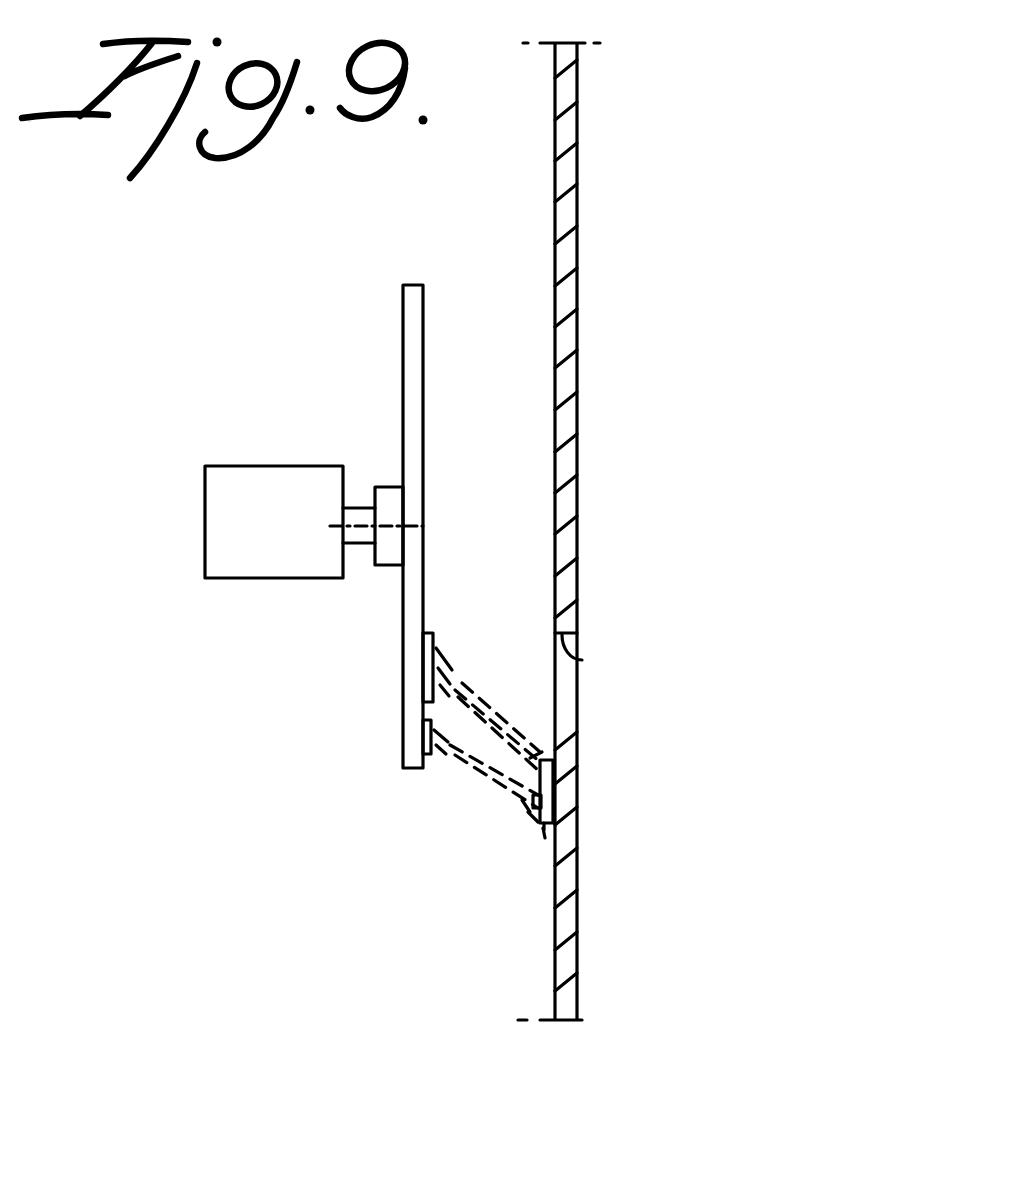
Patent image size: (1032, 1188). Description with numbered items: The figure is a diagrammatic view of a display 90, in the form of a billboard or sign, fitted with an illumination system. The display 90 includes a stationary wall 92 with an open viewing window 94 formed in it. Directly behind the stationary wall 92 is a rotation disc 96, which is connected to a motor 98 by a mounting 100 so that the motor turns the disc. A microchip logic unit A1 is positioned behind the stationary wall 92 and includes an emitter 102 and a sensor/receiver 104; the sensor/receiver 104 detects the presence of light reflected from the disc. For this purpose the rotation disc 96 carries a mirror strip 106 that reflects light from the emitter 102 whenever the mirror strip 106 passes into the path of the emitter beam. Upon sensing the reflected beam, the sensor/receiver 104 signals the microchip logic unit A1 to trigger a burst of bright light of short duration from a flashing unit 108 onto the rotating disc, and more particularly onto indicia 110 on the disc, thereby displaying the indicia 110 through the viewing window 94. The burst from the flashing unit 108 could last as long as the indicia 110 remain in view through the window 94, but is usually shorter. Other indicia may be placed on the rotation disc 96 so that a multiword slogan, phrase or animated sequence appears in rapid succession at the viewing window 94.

The display 90 is at (677, 512).
The stationary wall 92 is at (565, 368).
The open viewing window 94 is at (582, 660).
The rotation disc 96 is at (412, 591).
The motor 98 is at (238, 480).
The mounting 100 is at (390, 500).
The emitter 102 is at (527, 808).
The sensor/receiver 104 is at (535, 800).
The mirror strip 106 is at (433, 757).
The flashing unit 108 is at (536, 752).
The indicia 110 is at (423, 660).
The microchip logic unit A1 is at (543, 828).